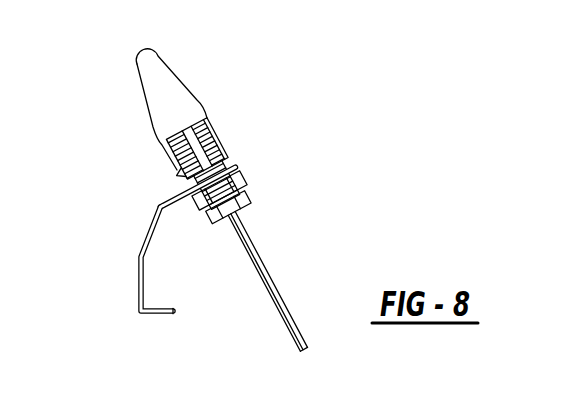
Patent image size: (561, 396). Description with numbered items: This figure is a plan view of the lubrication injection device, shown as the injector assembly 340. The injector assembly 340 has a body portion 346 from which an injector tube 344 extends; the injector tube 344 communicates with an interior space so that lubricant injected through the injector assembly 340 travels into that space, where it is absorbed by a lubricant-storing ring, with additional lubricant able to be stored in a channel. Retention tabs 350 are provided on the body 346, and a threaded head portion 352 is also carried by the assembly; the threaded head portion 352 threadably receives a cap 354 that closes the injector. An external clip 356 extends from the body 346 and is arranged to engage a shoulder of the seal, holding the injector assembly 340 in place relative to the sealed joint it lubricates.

The injector assembly 340 is at (258, 135).
The injector tube 344 is at (278, 284).
The body portion 346 is at (178, 176).
The retention tabs 350 is at (250, 190).
The threaded head portion 352 is at (210, 114).
The cap 354 is at (177, 77).
The external clip 356 is at (138, 318).